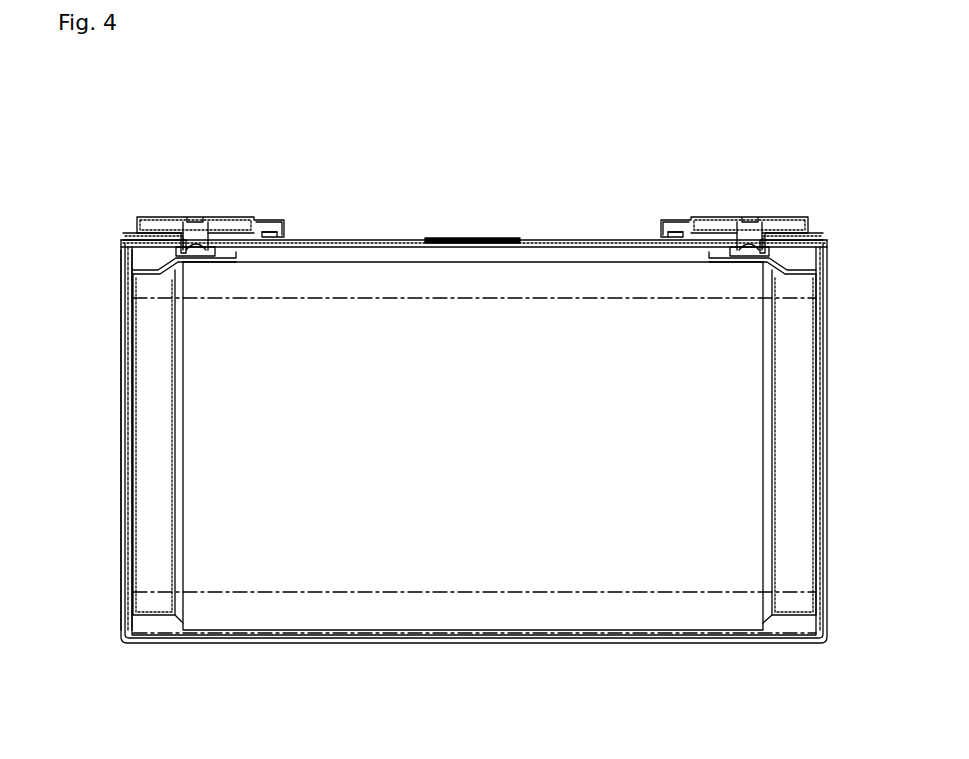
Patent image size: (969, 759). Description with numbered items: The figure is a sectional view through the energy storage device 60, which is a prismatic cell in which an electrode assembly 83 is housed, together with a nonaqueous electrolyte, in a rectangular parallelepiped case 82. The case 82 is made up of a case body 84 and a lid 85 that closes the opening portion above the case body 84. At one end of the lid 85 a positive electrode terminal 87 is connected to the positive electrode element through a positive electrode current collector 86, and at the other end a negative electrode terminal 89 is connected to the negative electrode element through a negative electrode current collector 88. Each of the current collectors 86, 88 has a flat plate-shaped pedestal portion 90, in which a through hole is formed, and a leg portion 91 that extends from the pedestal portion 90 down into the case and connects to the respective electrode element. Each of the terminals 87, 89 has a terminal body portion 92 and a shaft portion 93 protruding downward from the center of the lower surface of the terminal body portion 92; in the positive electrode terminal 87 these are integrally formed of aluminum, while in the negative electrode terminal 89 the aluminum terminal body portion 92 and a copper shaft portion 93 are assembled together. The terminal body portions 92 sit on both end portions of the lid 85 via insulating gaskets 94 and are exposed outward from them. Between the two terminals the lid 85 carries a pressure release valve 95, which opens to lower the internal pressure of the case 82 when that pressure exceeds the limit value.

The energy storage device 60 is at (469, 420).
The case 82 is at (447, 186).
The electrode assembly 83 is at (300, 572).
The case body 84 is at (121, 262).
The lid 85 is at (131, 238).
The positive electrode current collector 86 is at (150, 418).
The positive electrode terminal 87 is at (172, 224).
The negative electrode current collector 88 is at (797, 437).
The negative electrode terminal 89 is at (788, 222).
The pedestal portion 90 is at (218, 260).
The leg portion 91 is at (174, 487).
The terminal body portion 92 is at (228, 222).
The shaft portion 93 is at (193, 258).
The gasket 94 is at (270, 222).
The pressure release valve 95 is at (476, 237).